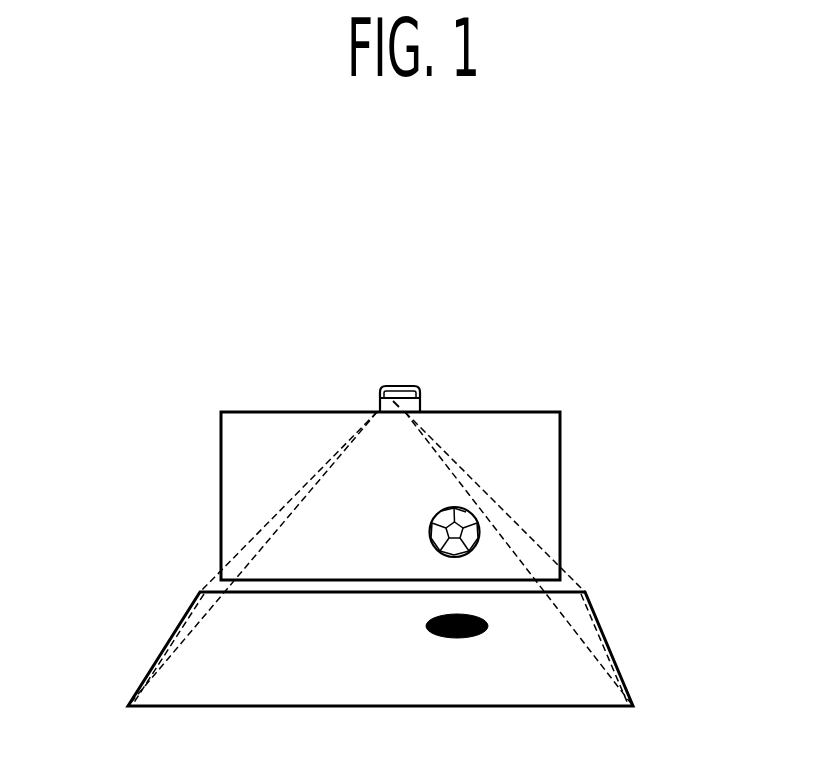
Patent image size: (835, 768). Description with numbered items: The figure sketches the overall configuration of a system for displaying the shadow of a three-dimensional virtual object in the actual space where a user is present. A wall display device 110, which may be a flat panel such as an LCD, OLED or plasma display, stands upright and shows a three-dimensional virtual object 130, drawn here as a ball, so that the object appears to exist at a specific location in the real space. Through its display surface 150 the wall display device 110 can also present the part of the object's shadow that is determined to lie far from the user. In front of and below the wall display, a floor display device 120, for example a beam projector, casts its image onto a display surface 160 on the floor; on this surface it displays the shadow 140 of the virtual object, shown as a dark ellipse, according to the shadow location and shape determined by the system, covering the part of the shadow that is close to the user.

The wall display device 110 is at (590, 462).
The floor display device 120 is at (640, 697).
The 3D virtual object 130 is at (480, 528).
The shadow of the 3D virtual object 140 is at (488, 623).
The display surface of the wall display device 150 is at (272, 475).
The display surface of the floor display device 160 is at (258, 657).